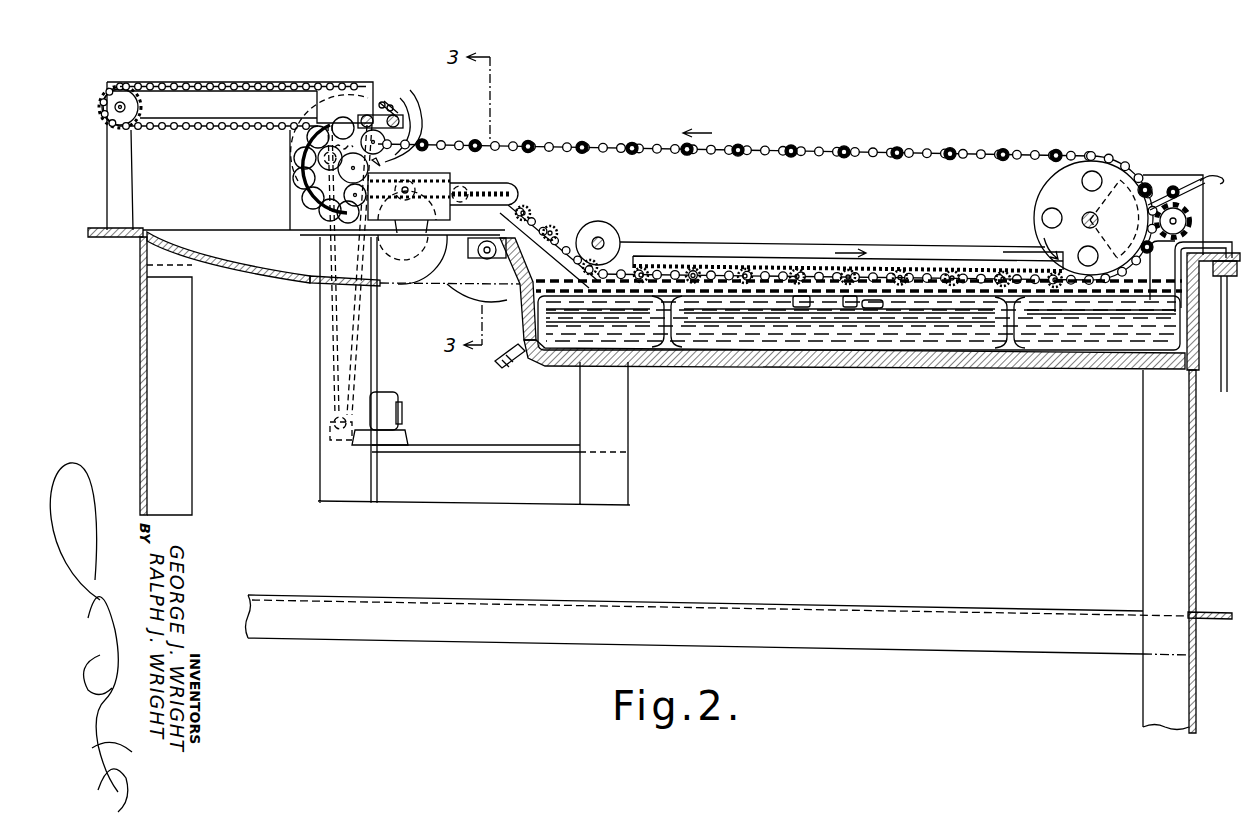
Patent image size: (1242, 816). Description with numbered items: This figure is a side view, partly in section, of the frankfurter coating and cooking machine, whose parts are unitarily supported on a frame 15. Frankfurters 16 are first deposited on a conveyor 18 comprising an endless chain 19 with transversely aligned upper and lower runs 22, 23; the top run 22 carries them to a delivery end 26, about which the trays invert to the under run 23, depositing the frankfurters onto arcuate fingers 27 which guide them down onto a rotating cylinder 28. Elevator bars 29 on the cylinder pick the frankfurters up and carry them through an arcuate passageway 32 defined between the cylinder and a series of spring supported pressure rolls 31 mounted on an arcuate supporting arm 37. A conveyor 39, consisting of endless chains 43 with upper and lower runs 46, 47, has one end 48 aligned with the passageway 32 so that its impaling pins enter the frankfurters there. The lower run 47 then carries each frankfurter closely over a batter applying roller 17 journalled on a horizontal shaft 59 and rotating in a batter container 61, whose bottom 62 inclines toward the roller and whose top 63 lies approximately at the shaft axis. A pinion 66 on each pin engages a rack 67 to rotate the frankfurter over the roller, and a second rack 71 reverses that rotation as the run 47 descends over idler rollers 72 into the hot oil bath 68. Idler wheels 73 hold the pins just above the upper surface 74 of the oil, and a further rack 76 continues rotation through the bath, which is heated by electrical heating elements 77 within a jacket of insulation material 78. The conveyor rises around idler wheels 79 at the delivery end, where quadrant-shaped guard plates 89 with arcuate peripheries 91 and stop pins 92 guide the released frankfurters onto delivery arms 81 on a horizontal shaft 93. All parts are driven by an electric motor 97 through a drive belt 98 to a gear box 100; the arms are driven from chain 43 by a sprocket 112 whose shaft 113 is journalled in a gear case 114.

The frame 15 is at (855, 604).
The frankfurters 16 is at (375, 130).
The batter applying roller 17 is at (422, 262).
The conveyor 18 is at (264, 82).
The endless chain 19 is at (162, 74).
The upper run 22 is at (188, 83).
The lower run 23 is at (195, 136).
The delivery end 26 is at (398, 104).
The arcuate fingers 27 is at (421, 126).
The rotating cylinder 28 is at (395, 180).
The elevator bars 29 is at (367, 114).
The pressure rolls 31 is at (307, 170).
The arcuate passageway 32 is at (310, 182).
The supporting arm 37 is at (343, 207).
The conveyor 39 is at (513, 142).
The endless chain 43 is at (582, 144).
The upper run 46 is at (745, 151).
The lower run 47 is at (812, 153).
The conveyor end 48 is at (312, 150).
The horizontal shaft 59 is at (388, 284).
The batter container 61 is at (240, 263).
The bottom 62 is at (285, 276).
The top 63 is at (185, 230).
The pinion 66 is at (690, 267).
The rack 67 is at (452, 189).
The hot oil bath 68 is at (946, 327).
The second rack 71 is at (617, 282).
The idler rollers 72 is at (512, 227).
The idler wheels 73 is at (600, 236).
The upper surface 74 is at (550, 270).
The rack 76 is at (906, 262).
The electrical heating elements 77 is at (750, 323).
The insulation material 78 is at (1040, 371).
The idler wheels 79 is at (1072, 176).
The delivery arms 81 is at (1218, 180).
The guard plates 89 is at (1093, 203).
The arcuate peripheries 91 is at (1151, 201).
The stop pins 92 is at (1138, 186).
The horizontal shaft 93 is at (1180, 193).
The electric motor 97 is at (388, 408).
The drive belt 98 is at (330, 322).
The gear box 100 is at (337, 100).
The sprocket 112 is at (1186, 233).
The shaft 113 is at (1176, 220).
The gear case 114 is at (1180, 180).